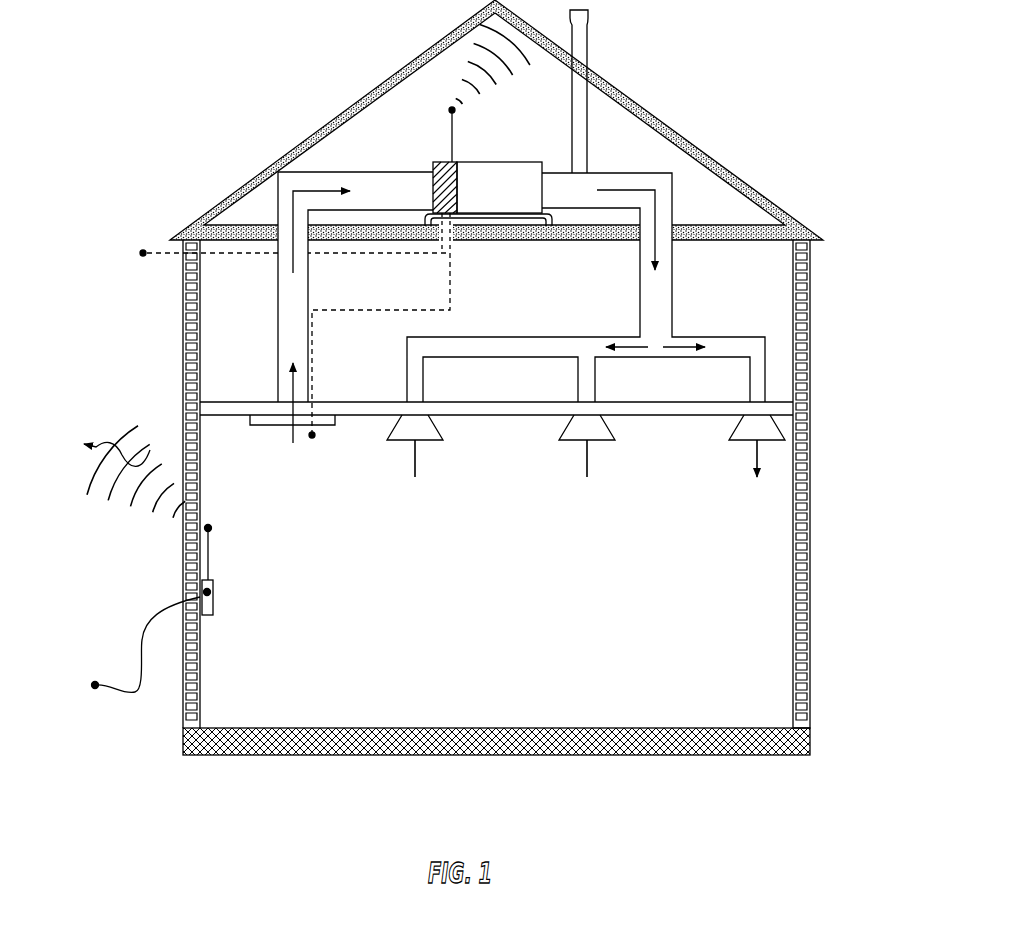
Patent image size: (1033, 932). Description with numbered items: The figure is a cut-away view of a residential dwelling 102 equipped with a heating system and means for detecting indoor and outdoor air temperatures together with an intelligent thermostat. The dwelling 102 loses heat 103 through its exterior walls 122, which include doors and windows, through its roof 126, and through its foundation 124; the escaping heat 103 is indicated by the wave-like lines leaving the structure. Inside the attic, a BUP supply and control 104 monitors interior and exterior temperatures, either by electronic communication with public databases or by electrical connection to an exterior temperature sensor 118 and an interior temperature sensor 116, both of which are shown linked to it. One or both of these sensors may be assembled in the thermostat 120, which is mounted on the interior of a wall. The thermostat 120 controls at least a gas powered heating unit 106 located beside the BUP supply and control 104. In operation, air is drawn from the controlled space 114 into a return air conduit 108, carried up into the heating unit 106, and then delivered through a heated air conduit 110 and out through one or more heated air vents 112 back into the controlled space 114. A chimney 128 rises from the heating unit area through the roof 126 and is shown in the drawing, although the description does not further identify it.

The dwelling 102 is at (706, 113).
The heat 103 is at (183, 443).
The BUP supply and control 104 is at (451, 162).
The gas powered heating unit 106 is at (492, 166).
The return air conduit 108 is at (278, 338).
The heated air conduit 110 is at (672, 292).
The heated air vents 112 is at (732, 432).
The controlled space 114 is at (515, 593).
The interior temperature sensor 116 is at (312, 435).
The exterior temperature sensor 118 is at (143, 253).
The thermostat 120 is at (213, 610).
The exterior walls 122 is at (806, 524).
The foundation 124 is at (500, 755).
The roof 126 is at (337, 113).
The chimney 128 is at (590, 47).